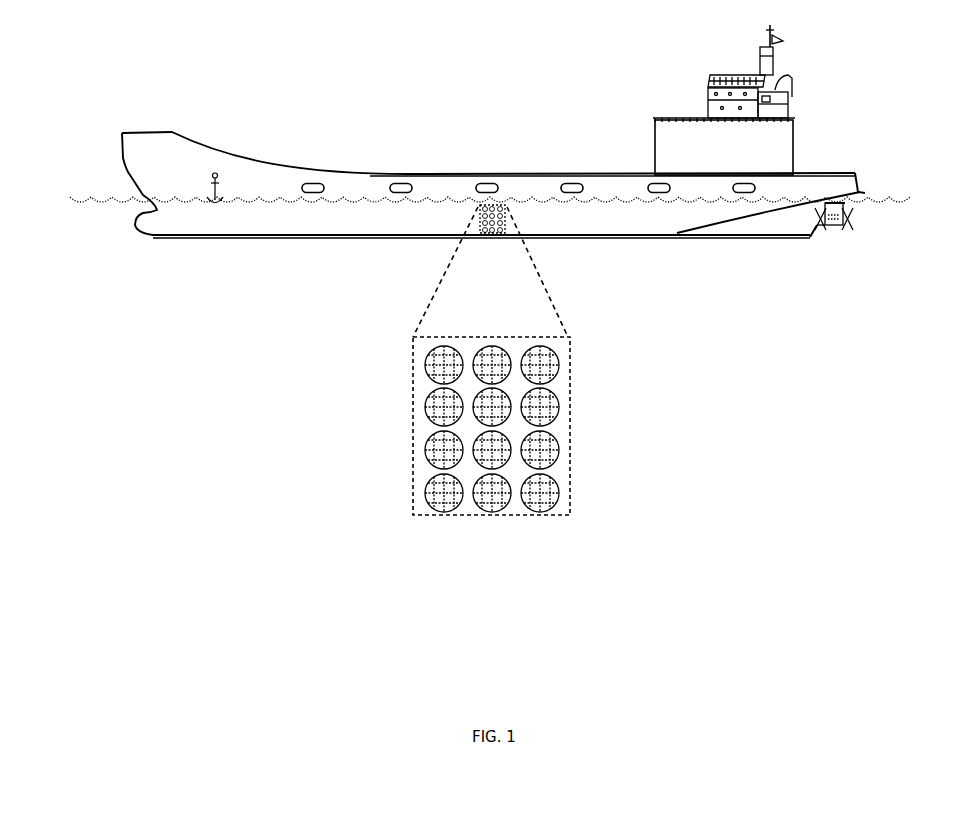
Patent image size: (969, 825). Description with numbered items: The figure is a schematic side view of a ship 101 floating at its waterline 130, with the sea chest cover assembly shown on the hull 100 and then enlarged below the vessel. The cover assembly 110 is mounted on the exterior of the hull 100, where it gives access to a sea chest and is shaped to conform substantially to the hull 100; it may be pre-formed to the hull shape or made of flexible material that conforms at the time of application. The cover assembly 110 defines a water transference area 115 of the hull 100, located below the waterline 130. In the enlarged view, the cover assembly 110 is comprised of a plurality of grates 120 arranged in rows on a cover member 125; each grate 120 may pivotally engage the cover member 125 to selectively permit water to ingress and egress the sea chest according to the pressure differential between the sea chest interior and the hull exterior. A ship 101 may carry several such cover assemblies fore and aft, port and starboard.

The hull 100 is at (308, 222).
The ship 101 is at (432, 142).
The cover assembly 110 is at (403, 527).
The water transference area 115 is at (503, 203).
The grate 120 is at (540, 504).
The cover member 125 is at (467, 503).
The waterline 130 is at (85, 200).